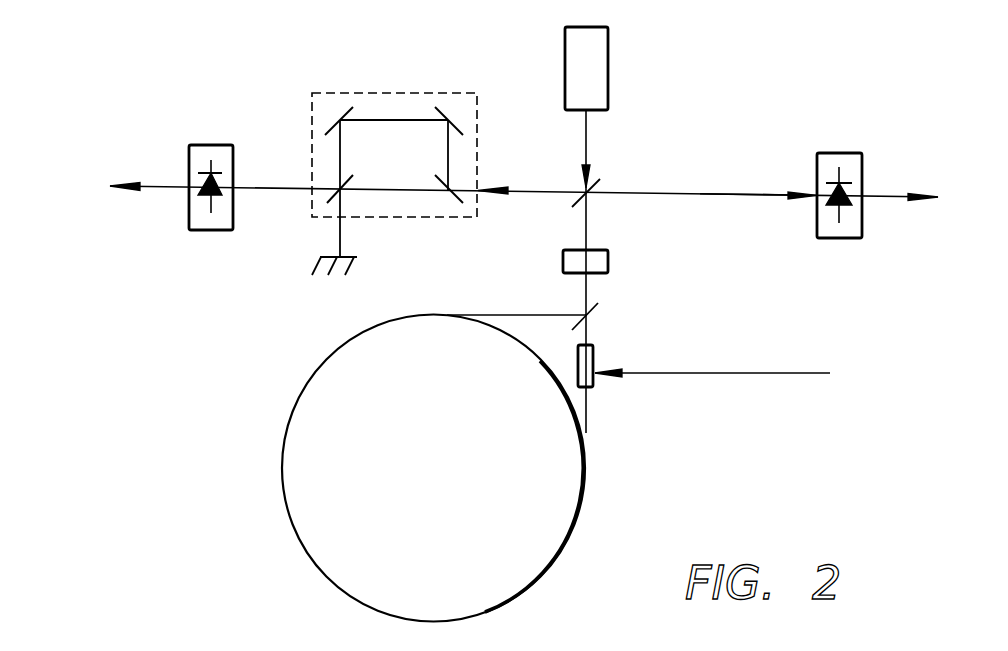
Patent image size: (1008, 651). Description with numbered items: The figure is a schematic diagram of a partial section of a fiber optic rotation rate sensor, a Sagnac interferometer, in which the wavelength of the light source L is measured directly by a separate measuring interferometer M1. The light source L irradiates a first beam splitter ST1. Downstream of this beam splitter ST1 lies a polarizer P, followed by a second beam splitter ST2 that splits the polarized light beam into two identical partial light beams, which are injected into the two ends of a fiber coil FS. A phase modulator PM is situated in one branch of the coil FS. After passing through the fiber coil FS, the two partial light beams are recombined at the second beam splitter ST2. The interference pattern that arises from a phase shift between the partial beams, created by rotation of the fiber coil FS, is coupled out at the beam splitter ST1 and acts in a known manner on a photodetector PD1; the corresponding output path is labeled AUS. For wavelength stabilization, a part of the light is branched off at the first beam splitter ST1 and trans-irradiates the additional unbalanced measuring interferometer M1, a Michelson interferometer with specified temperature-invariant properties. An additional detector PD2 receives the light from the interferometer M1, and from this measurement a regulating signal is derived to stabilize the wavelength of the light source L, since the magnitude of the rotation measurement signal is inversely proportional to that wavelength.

The additional detector PD2 is at (225, 146).
The measuring interferometer M1 is at (417, 93).
The light source L is at (609, 68).
The beam splitter ST1 is at (600, 183).
The output beam AUS is at (758, 193).
The photodetector PD1 is at (852, 152).
The polarizer P is at (563, 263).
The second beam splitter ST2 is at (598, 310).
The phase modulator PM is at (593, 355).
The fiber coil FS is at (325, 425).